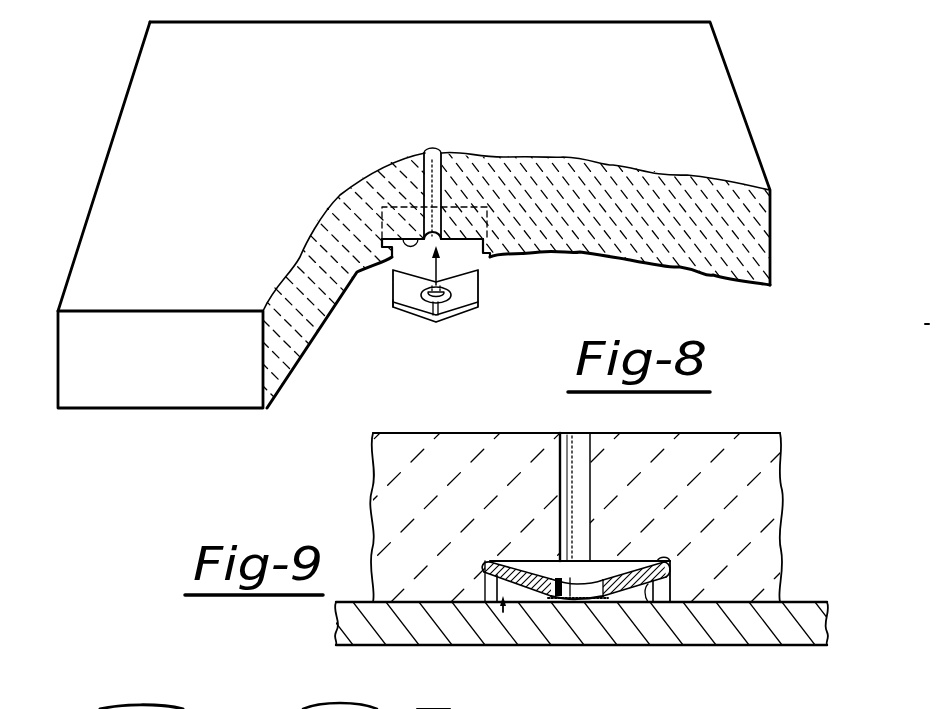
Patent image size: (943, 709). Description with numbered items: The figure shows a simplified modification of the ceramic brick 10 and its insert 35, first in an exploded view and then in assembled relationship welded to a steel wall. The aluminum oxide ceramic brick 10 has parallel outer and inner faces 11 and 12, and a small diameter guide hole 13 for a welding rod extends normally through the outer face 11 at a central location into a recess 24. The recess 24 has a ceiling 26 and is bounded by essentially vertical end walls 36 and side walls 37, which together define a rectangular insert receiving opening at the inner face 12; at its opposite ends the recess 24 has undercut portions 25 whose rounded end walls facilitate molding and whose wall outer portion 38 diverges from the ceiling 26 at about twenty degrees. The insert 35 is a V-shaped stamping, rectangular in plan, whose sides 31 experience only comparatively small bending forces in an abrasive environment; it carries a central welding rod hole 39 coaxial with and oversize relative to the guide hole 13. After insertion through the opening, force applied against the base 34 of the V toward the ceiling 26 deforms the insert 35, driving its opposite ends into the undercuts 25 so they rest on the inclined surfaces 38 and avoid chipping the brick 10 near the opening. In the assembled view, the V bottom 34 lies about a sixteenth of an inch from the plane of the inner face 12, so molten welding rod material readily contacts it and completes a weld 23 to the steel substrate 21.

In FIG. 8, the ceramic brick 10 is at (762, 98).
In FIG. 8, the outer face 11 is at (630, 63).
In FIG. 9, the outer face 11 is at (748, 433).
In FIG. 8, the inner face 12 is at (173, 410).
In FIG. 9, the inner face 12 is at (757, 628).
In FIG. 8, the guide hole 13 is at (436, 152).
In FIG. 9, the guide hole 13 is at (570, 452).
In FIG. 9, the steel substrate 21 is at (350, 618).
In FIG. 9, the weld 23 is at (617, 603).
In FIG. 8, the recess 24 is at (393, 253).
In FIG. 9, the recess 24 is at (637, 603).
In FIG. 8, the undercut portions 25 is at (383, 240).
In FIG. 9, the undercut portions 25 is at (487, 565).
In FIG. 8, the ceiling 26 is at (418, 237).
In FIG. 9, the ceiling 26 is at (535, 557).
In FIG. 8, the sides of insert 31 is at (398, 317).
In FIG. 8, the base of the V 34 is at (442, 320).
In FIG. 9, the base of the V 34 is at (553, 603).
In FIG. 8, the insert 35 is at (489, 290).
In FIG. 9, the insert 35 is at (497, 601).
In FIG. 9, the end walls 36 is at (662, 603).
In FIG. 9, the side walls 37 is at (613, 560).
In FIG. 9, the wall outer portion 38 is at (668, 560).
In FIG. 8, the welding rod hole 39 is at (448, 289).
In FIG. 9, the welding rod hole 39 is at (508, 607).